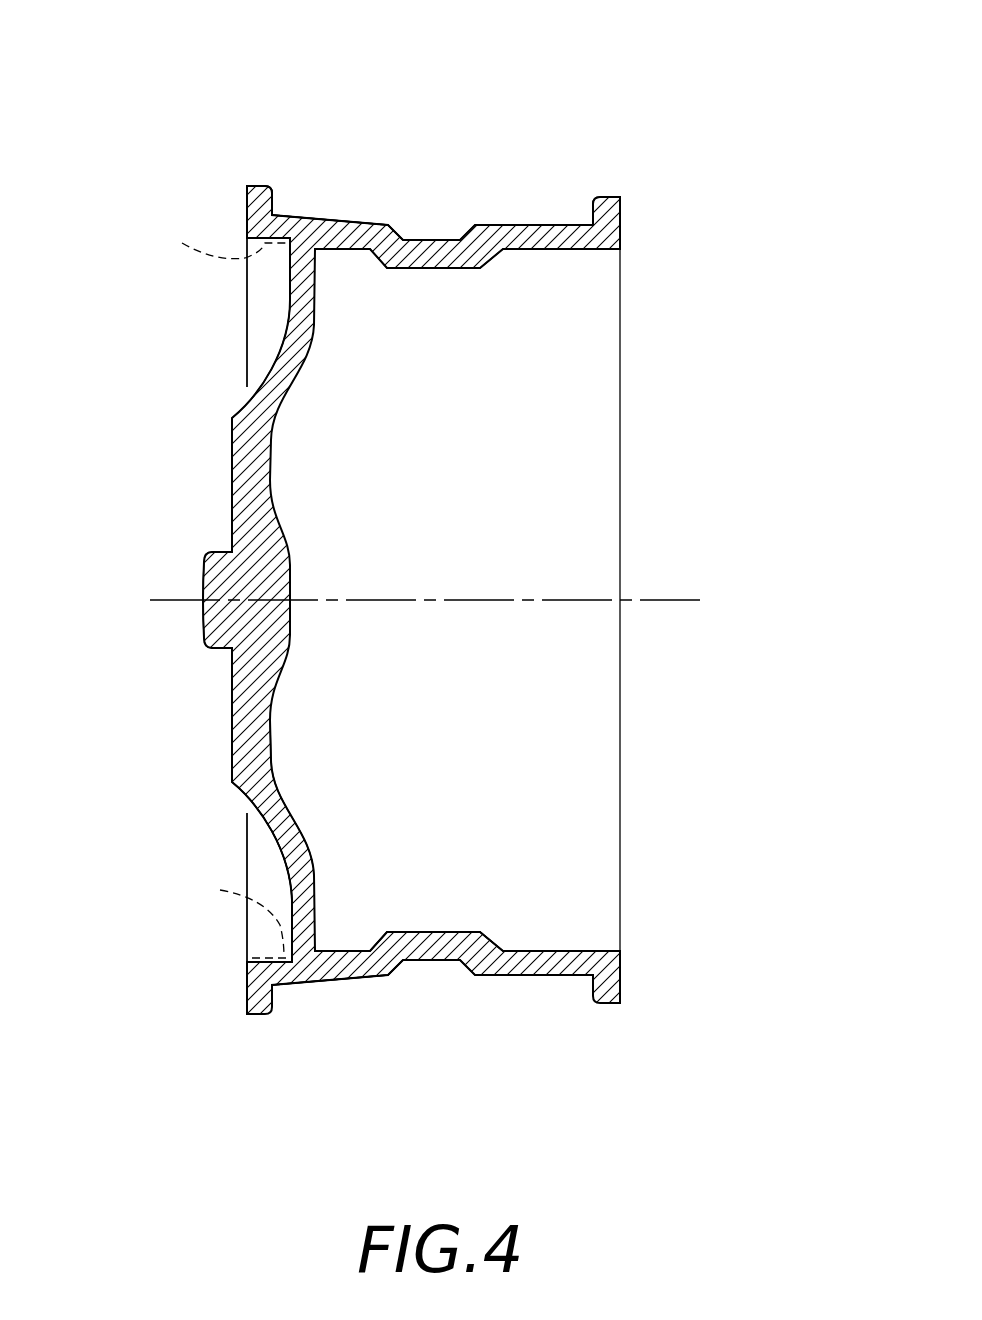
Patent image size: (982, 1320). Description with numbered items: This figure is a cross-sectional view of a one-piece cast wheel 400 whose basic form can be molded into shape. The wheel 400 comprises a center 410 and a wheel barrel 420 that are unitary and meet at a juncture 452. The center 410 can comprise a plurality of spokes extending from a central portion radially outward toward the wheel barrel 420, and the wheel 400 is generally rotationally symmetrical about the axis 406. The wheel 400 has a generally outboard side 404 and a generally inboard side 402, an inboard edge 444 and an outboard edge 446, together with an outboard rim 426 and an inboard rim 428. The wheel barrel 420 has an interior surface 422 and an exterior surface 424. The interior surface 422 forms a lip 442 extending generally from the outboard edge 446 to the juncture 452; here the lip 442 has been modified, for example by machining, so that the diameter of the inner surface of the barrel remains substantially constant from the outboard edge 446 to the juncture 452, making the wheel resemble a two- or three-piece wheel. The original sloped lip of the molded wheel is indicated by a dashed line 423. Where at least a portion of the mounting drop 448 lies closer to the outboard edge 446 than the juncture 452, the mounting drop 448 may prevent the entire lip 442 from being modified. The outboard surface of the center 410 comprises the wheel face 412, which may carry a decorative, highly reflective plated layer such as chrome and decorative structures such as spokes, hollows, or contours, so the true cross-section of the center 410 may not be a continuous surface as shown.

The one-piece cast wheel 400 is at (345, 105).
The inboard side 402 is at (832, 562).
The outboard side 404 is at (87, 557).
The axis 406 is at (183, 600).
The center 410 is at (232, 765).
The wheel face 412 is at (217, 723).
The wheel barrel 420 is at (393, 160).
The interior surface 422 is at (279, 253).
The dashed line 423 is at (209, 588).
The exterior surface 424 is at (293, 197).
The outboard rim 426 is at (255, 185).
The inboard rim 428 is at (627, 184).
The lip 442 is at (268, 950).
The inboard edge 444 is at (621, 456).
The outboard edge 446 is at (232, 448).
The mounting drop 448 is at (446, 985).
The juncture 452 is at (302, 230).